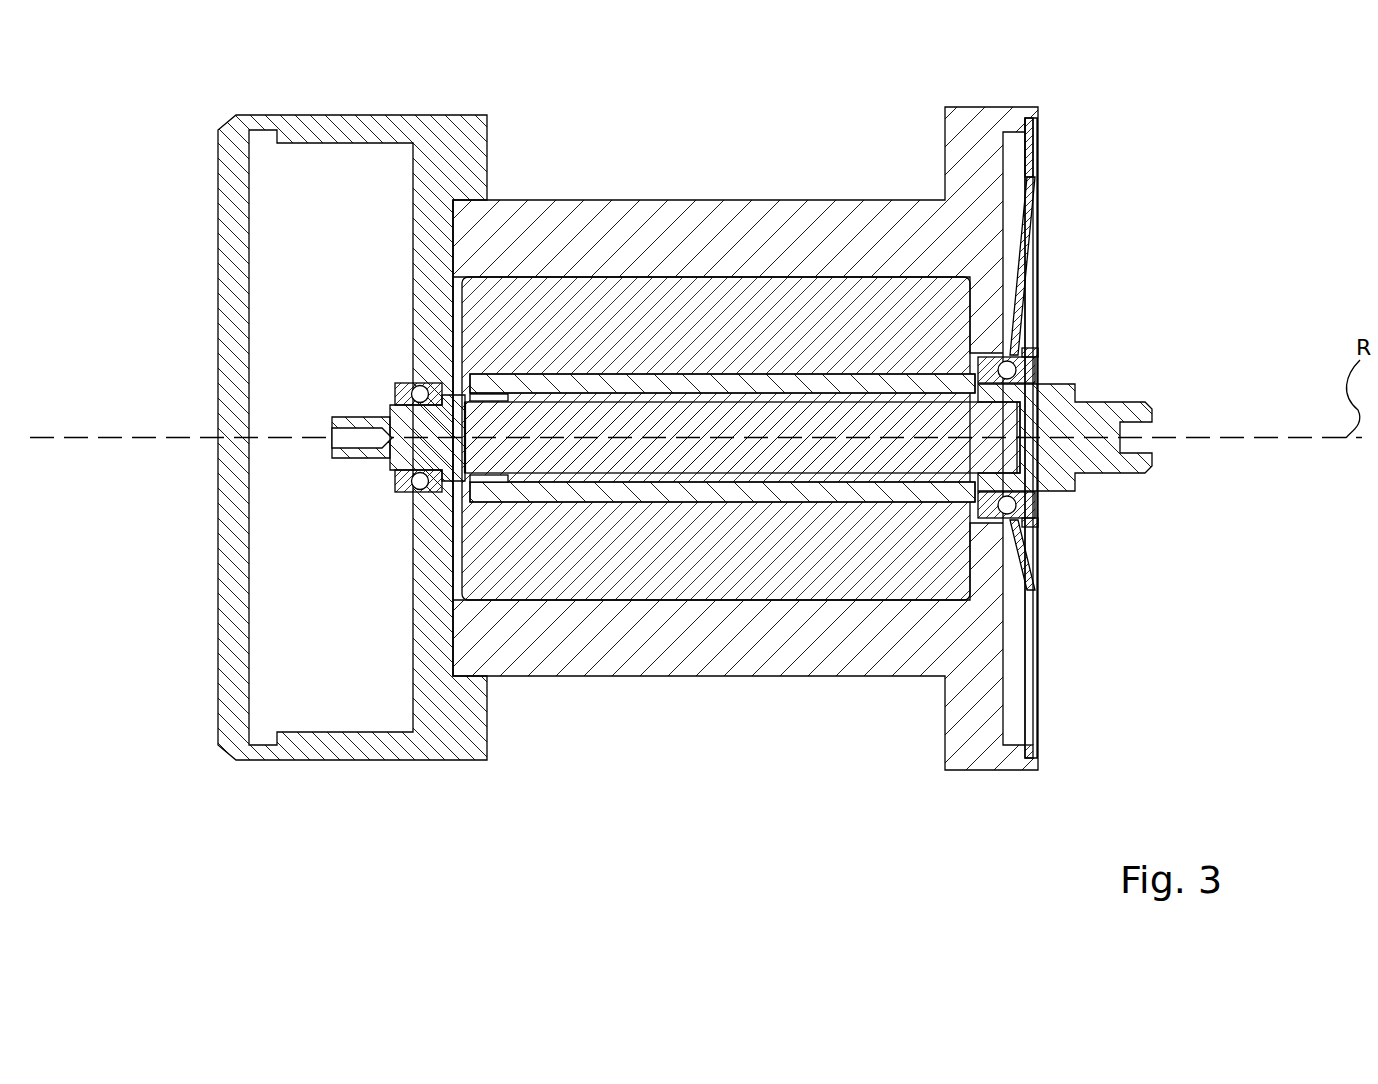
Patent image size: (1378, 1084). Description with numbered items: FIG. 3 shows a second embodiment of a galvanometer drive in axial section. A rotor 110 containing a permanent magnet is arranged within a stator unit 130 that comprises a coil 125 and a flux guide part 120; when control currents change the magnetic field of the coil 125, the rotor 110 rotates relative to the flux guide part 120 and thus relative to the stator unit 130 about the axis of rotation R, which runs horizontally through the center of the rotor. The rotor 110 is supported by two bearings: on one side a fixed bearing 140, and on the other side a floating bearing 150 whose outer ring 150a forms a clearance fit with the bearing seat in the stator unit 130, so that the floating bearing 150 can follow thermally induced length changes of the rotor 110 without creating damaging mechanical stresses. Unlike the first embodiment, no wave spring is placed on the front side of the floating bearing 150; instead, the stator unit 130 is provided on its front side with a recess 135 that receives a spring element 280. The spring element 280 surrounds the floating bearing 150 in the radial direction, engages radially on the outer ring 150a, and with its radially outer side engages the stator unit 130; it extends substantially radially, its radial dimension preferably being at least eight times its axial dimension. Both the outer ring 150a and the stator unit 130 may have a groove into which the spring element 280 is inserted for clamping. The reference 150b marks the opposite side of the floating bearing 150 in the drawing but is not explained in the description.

The rotor 110 is at (752, 462).
The flux guide part 120 is at (664, 317).
The coil 125 is at (556, 377).
The stator unit 130 is at (976, 133).
The recess 135 is at (1013, 672).
The fixed bearing 140 is at (405, 397).
The floating bearing 150 is at (1022, 371).
The outer ring 150a is at (1022, 353).
The bearing retaining element 150b is at (1033, 503).
The spring element 280 is at (1030, 178).